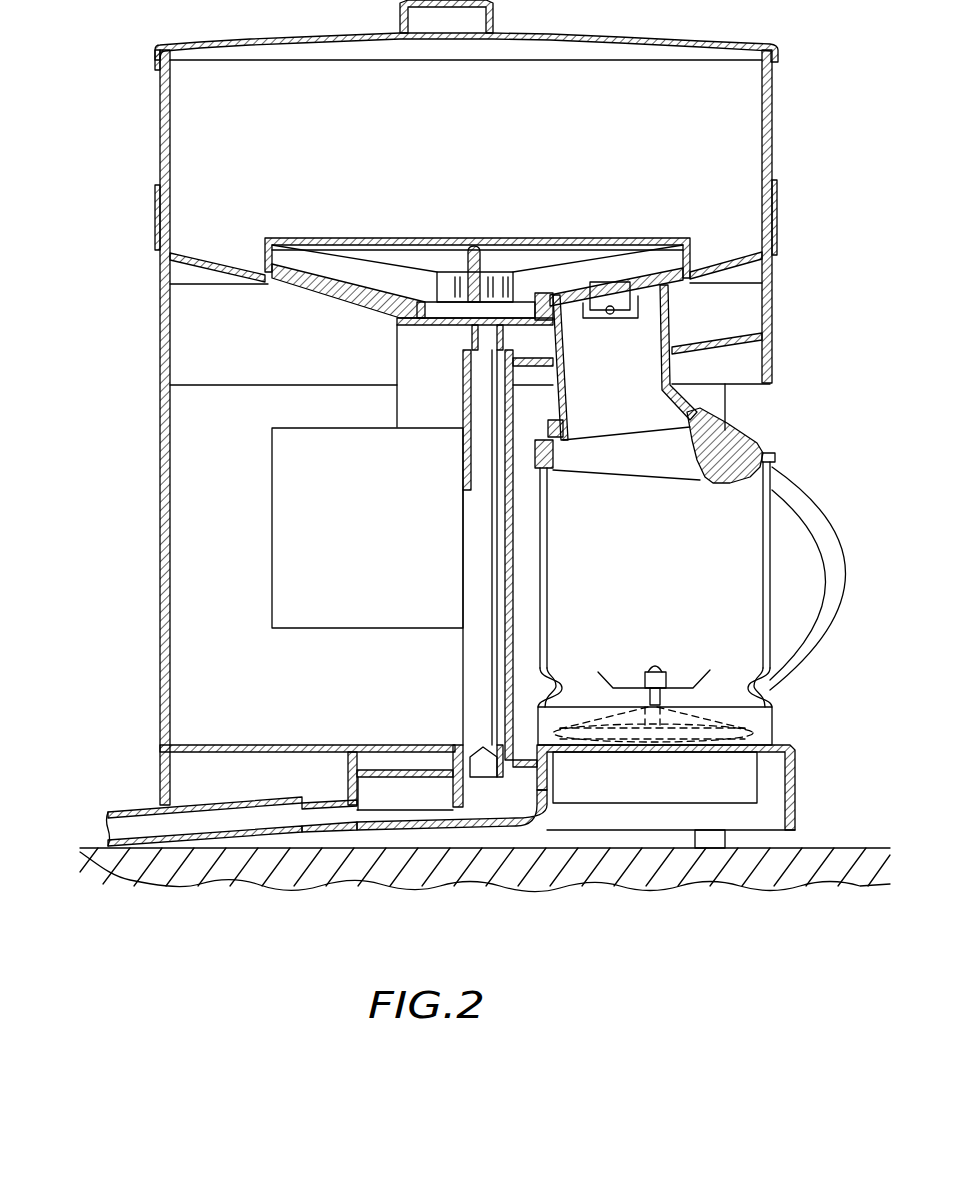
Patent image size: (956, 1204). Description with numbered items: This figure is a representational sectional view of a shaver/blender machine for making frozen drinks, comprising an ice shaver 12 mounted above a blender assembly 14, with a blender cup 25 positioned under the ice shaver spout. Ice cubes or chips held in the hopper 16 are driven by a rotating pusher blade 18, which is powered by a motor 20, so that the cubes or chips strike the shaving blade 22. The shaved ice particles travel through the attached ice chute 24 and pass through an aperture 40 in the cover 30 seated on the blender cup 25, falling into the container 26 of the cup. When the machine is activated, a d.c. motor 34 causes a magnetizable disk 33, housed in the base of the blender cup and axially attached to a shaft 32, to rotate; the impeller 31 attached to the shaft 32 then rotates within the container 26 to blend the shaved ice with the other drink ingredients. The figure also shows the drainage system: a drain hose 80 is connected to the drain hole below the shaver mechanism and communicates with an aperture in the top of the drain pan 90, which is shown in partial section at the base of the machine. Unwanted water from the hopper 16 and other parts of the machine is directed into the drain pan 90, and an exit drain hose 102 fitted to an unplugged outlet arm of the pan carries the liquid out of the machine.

The ice shaver 12 is at (855, 30).
The blender assembly 14 is at (866, 805).
The hopper 16 is at (162, 133).
The pusher blade 18 is at (462, 252).
The motor 20 is at (384, 534).
The shaving blade 22 is at (612, 296).
The ice chute 24 is at (634, 411).
The blender cup 25 is at (760, 640).
The container 26 is at (717, 581).
The cover 30 is at (735, 435).
The impeller 31 is at (628, 680).
The shaft 32 is at (664, 690).
The magnetizable disk 33 is at (745, 733).
The d.c. motor 34 is at (674, 786).
The aperture 40 is at (637, 492).
The drain hose 80 is at (470, 650).
The drain pan 90 is at (455, 818).
The exit drain hose 102 is at (200, 800).